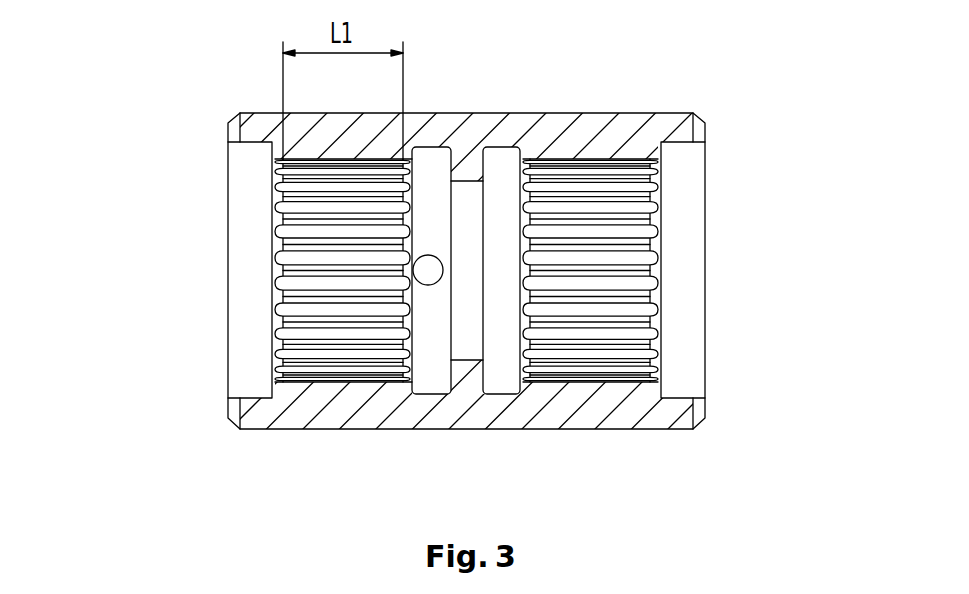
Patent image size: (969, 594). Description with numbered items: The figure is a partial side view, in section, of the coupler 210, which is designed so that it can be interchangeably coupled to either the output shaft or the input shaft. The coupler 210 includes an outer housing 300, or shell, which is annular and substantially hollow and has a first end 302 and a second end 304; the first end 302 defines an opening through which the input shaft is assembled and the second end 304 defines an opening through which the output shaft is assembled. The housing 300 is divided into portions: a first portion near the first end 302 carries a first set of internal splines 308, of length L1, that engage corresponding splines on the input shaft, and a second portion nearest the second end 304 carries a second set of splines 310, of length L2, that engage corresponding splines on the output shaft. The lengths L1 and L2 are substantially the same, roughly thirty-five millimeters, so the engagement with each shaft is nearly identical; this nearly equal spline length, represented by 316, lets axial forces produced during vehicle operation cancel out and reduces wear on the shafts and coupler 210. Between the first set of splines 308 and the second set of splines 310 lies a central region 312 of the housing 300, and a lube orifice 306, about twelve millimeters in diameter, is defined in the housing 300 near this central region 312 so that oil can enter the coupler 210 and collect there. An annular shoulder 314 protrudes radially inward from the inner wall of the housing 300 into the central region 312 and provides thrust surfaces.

The coupler 210 is at (190, 91).
The outer housing 300 is at (328, 415).
The first end 302 is at (176, 220).
The second end 304 is at (742, 224).
The lube orifice 306 is at (431, 290).
The first set of internal splines 308 is at (297, 297).
The second set of splines 310 is at (558, 172).
The central region 312 is at (472, 388).
The shoulder 314 is at (468, 168).
The equal spline length 316 is at (630, 153).